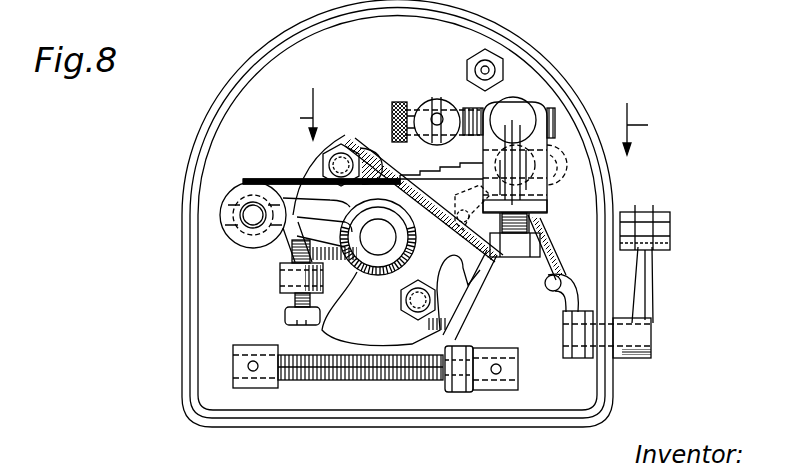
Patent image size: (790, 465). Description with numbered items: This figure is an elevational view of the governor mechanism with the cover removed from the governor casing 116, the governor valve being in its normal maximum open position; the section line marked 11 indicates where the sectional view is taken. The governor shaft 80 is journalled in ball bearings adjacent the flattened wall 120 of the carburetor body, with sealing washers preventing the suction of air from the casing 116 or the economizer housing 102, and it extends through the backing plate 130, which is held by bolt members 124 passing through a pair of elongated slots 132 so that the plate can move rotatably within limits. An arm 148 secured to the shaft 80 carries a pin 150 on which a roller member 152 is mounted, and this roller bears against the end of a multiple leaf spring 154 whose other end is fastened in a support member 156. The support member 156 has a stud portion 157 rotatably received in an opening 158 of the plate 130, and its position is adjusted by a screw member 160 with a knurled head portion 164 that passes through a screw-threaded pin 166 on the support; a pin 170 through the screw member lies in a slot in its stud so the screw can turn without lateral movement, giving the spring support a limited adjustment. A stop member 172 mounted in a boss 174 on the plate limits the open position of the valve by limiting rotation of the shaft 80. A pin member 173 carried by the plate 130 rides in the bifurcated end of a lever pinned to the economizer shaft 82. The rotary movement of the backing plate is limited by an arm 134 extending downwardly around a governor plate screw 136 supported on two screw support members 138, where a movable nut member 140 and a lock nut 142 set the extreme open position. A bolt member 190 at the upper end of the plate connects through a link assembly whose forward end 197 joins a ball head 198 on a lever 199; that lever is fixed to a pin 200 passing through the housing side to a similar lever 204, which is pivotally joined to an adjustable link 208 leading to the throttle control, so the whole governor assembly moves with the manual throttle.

The section line 11- 11 is at (479, 121).
The governor shaft 80 is at (378, 237).
The economizer shaft 82 is at (490, 257).
The economizer housing 102 is at (437, 100).
The governor casing 116 is at (210, 296).
The flattened wall 120 is at (424, 106).
The bolt members 124 is at (323, 160).
The backing plate 130 is at (282, 250).
The elongated slots 132 is at (325, 180).
The arm 134 is at (455, 392).
The governor plate screw 136 is at (318, 380).
The screw support members 138 is at (258, 390).
The movable nut member 140 is at (455, 393).
The lock nut 142 is at (466, 393).
The arm 148 is at (352, 278).
The pin 150 is at (248, 218).
The roller member 152 is at (232, 200).
The multiple leaf spring 154 is at (440, 170).
The support member 156 is at (568, 183).
The stud portion 157 is at (545, 218).
The opening 158 is at (568, 165).
The screw member 160 is at (553, 113).
The knurled head portion 164 is at (392, 110).
The screw-threaded pin 166 is at (520, 100).
The pin 170 is at (433, 120).
The stop member 172 is at (290, 312).
The pin member 173 is at (424, 200).
The boss 174 is at (280, 285).
The bolt member 190 is at (488, 71).
The forward end 197 is at (543, 248).
The ball head 198 is at (546, 265).
The lever 199 is at (570, 300).
The pin 200 is at (628, 333).
The lever 204 is at (648, 272).
The adjustable link 208 is at (660, 232).